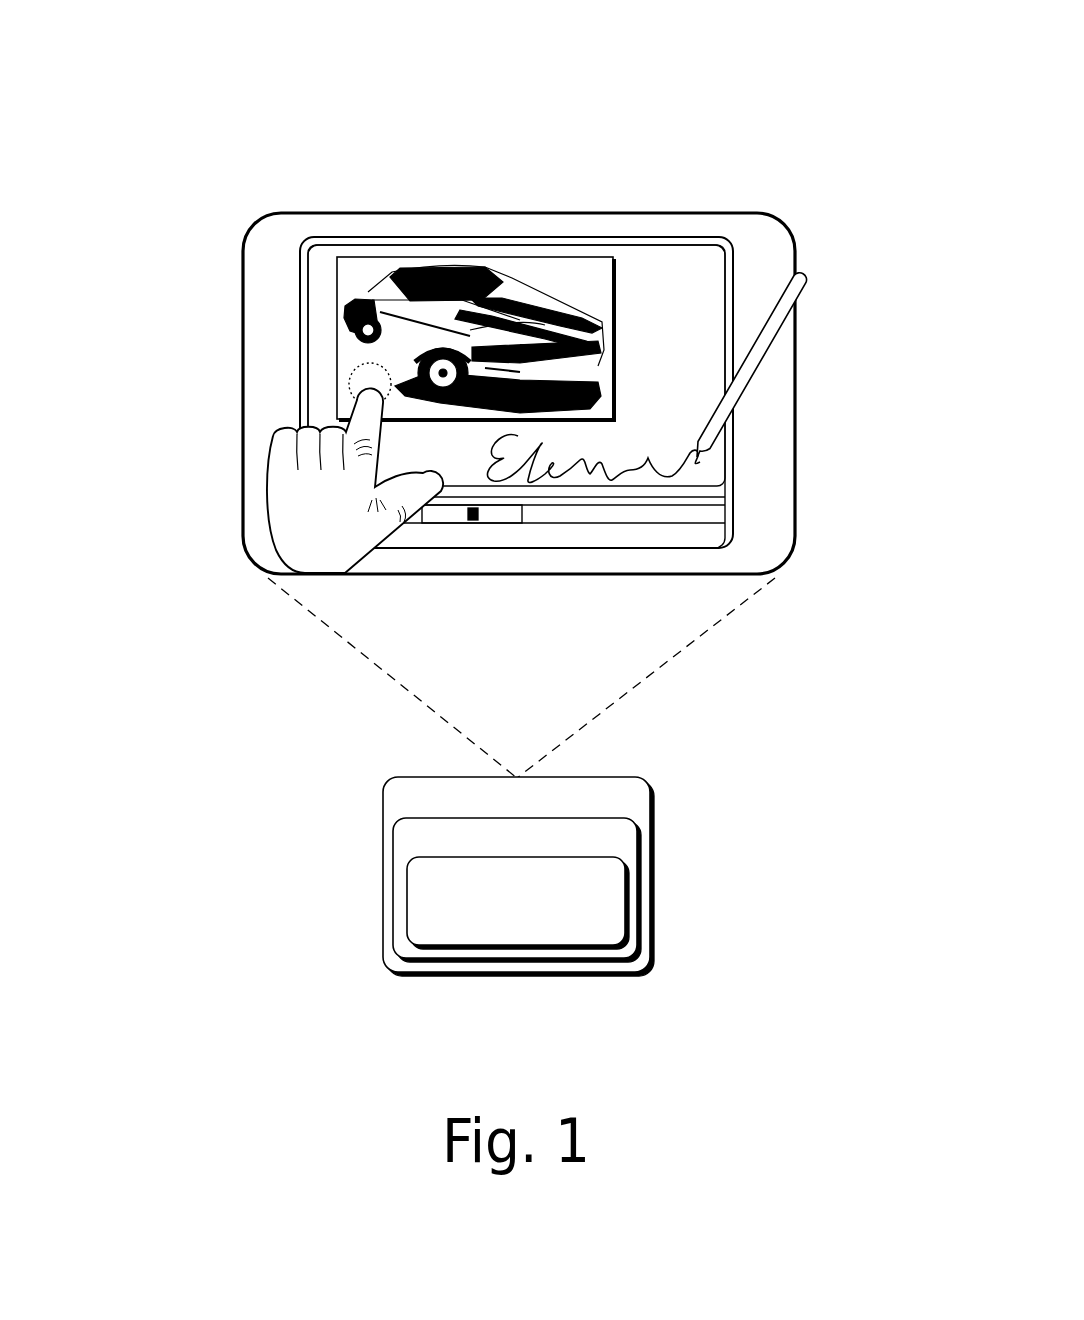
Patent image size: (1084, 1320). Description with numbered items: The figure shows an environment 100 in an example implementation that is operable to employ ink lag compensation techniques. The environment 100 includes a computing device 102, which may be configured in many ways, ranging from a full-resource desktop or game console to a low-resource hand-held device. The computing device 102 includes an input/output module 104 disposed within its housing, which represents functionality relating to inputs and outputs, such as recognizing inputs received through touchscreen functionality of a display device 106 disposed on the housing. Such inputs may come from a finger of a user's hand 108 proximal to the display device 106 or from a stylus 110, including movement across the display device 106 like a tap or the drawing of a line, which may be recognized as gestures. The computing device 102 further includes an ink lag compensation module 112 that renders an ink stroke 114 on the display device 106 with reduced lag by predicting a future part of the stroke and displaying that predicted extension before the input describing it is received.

The environment 100 is at (226, 78).
The computing device 102 is at (622, 809).
The input/output module 104 is at (630, 847).
The display device 106 is at (710, 278).
The user's hand 108 is at (342, 543).
The stylus 110 is at (803, 275).
The ink lag compensation module 112 is at (570, 936).
The ink stroke 114 is at (583, 452).